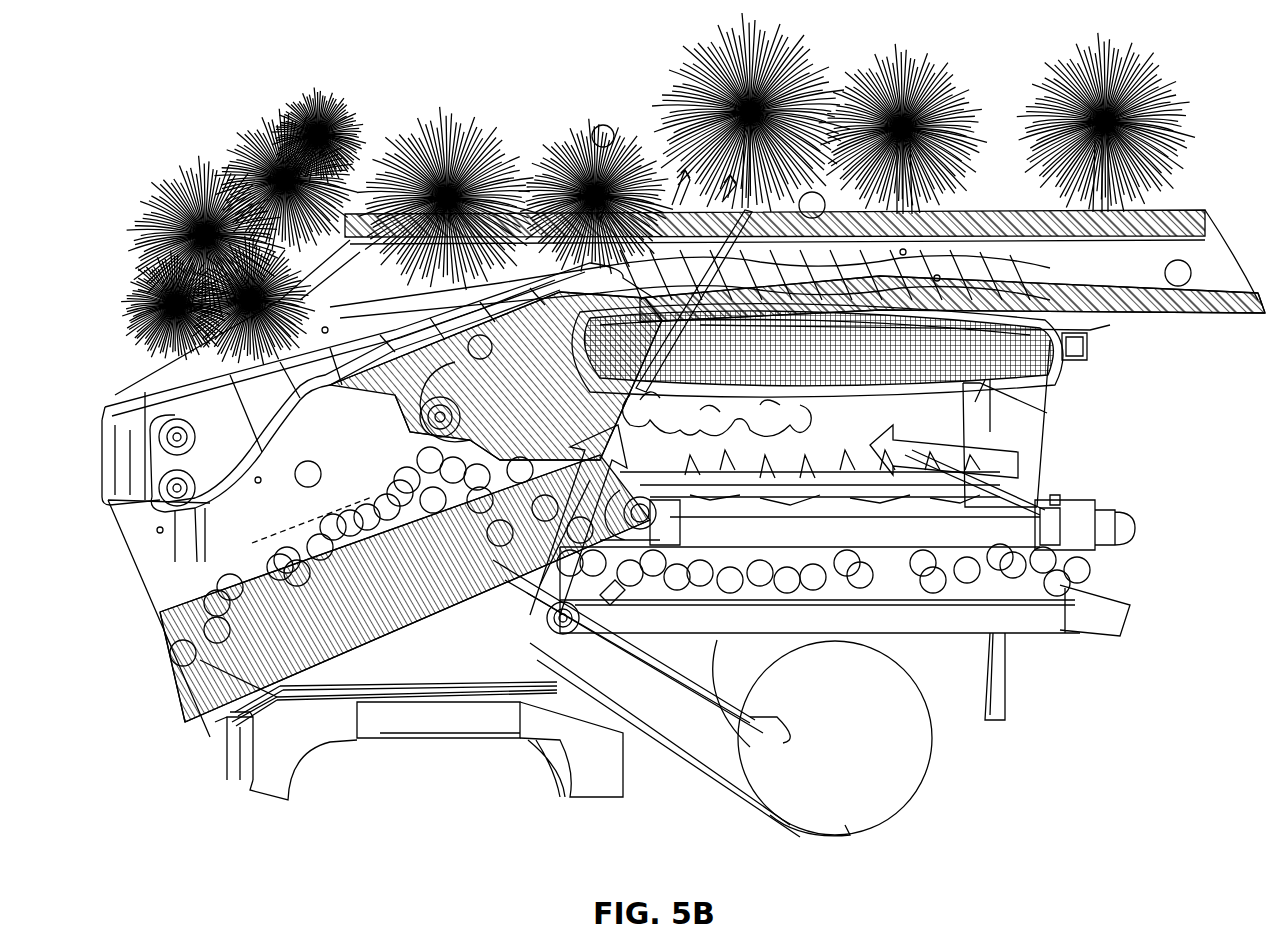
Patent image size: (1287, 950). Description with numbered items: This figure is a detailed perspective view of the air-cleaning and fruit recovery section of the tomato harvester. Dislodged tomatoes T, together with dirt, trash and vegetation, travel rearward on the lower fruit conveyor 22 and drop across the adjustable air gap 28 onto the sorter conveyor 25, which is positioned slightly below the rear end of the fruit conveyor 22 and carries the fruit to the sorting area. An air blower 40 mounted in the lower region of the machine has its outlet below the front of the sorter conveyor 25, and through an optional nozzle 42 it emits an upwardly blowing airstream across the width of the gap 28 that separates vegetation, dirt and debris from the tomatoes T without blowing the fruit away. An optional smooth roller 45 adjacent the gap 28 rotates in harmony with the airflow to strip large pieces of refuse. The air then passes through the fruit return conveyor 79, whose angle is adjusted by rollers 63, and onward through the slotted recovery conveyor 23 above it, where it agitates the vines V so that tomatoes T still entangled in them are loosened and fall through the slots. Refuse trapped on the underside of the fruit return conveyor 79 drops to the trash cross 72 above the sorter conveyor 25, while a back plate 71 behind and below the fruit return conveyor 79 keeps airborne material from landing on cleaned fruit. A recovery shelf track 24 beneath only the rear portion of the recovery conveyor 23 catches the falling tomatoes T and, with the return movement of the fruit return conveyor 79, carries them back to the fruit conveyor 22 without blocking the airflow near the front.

The vines V is at (458, 108).
The recovery conveyor 23 is at (455, 254).
The recovery shelf track 24 is at (1088, 333).
The fruit return conveyor 79 is at (810, 392).
The rollers 63 is at (648, 398).
The trash cross (refuse removal surface) 72 is at (817, 468).
The back plate 71 is at (1020, 428).
The tomatoes T is at (306, 492).
The sorter conveyor 25 is at (595, 608).
The air gap 28 is at (508, 575).
The nozzle 42 is at (530, 625).
The roller 45 is at (615, 600).
The fruit conveyor 22 is at (437, 600).
The air blower 40 is at (892, 822).